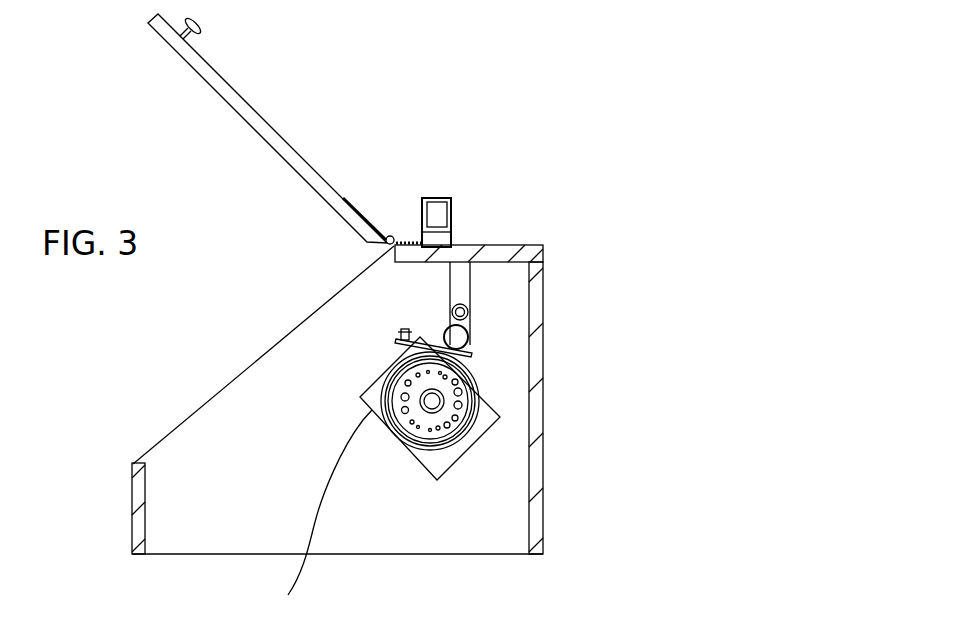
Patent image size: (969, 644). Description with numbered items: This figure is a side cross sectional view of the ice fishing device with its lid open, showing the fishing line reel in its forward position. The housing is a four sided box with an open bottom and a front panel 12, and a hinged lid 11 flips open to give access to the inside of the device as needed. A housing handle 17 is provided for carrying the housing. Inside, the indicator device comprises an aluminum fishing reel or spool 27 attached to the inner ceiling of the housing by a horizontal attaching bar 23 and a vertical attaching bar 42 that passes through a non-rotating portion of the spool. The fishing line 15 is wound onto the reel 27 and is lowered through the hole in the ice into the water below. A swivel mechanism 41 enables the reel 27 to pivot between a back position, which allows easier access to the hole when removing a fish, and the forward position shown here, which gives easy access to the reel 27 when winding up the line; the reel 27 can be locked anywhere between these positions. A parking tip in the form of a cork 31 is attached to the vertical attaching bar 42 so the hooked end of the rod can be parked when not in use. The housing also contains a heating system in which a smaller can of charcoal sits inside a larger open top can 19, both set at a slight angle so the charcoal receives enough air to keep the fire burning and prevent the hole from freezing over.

The hinged lid 11 is at (267, 125).
The front panel 12 is at (138, 527).
The fishing line 15 is at (315, 522).
The housing handle 17 is at (437, 210).
The larger open top can 19 is at (440, 468).
The horizontal attaching bar 23 is at (470, 375).
The fishing reel 27 is at (447, 417).
The cork 31 is at (450, 328).
The swivel mechanism 41 is at (470, 307).
The vertical attaching bar 42 is at (460, 282).